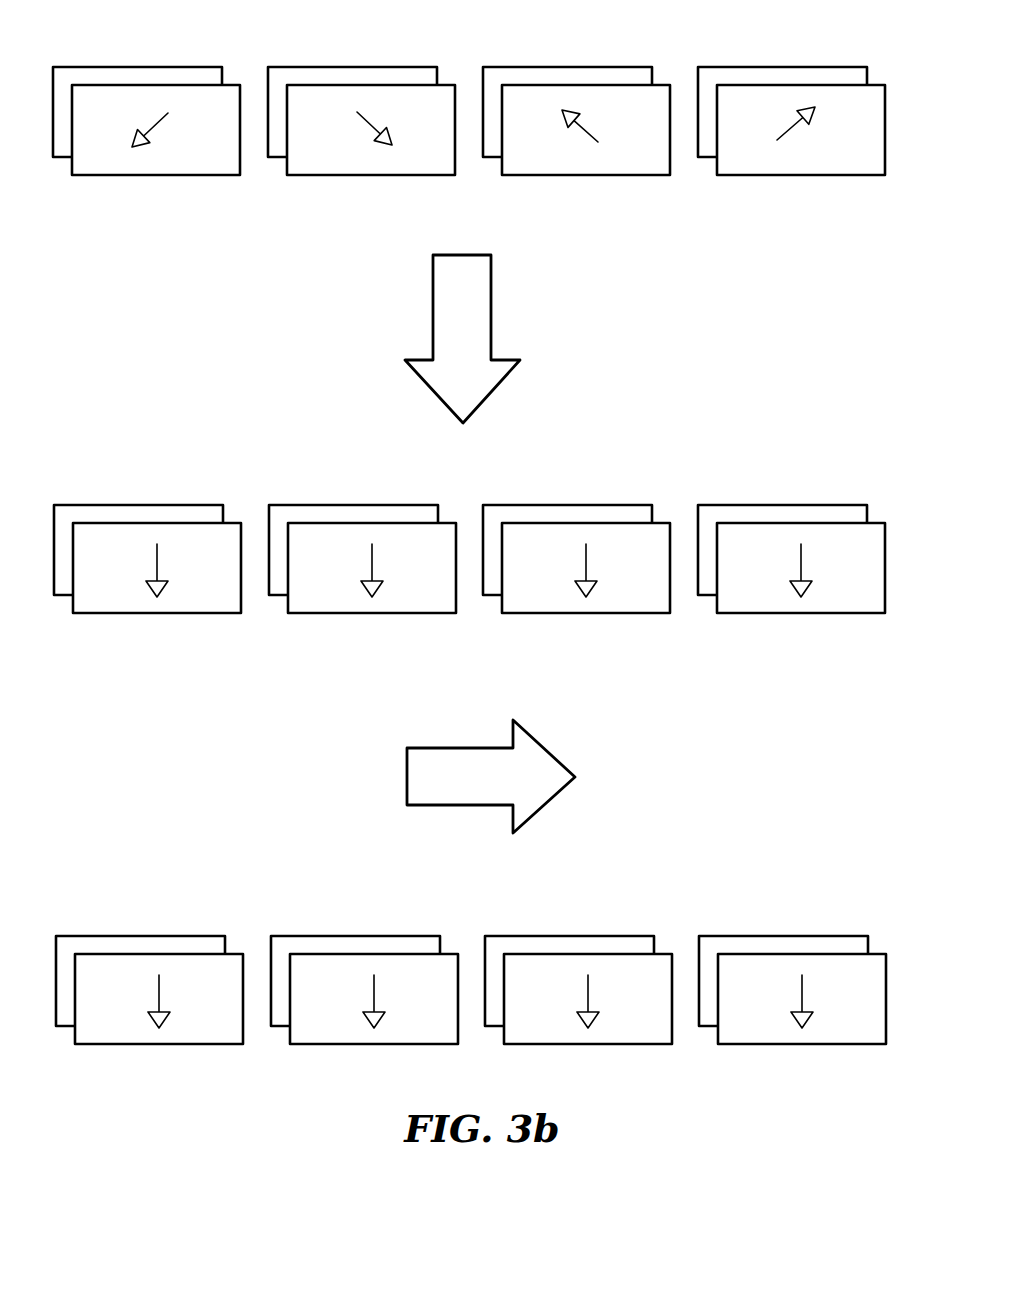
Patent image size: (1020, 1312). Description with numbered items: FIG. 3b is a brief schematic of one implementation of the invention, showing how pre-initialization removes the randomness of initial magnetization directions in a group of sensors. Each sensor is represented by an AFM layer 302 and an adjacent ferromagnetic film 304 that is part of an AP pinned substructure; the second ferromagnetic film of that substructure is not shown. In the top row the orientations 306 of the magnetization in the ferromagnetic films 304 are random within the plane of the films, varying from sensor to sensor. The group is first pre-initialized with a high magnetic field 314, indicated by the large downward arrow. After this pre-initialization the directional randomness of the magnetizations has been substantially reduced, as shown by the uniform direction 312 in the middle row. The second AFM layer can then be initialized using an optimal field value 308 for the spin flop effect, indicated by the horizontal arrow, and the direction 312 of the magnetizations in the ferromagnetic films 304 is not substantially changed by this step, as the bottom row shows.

The AFM layer 302 is at (102, 75).
The ferromagnetic film 304 is at (183, 92).
The orientations of the magnetization 306 is at (155, 124).
The orientation of the initialization magnetic field 308 is at (451, 748).
The direction of the magnetizations after pre-initialization 312 is at (157, 562).
The high magnetic field 314 is at (493, 308).